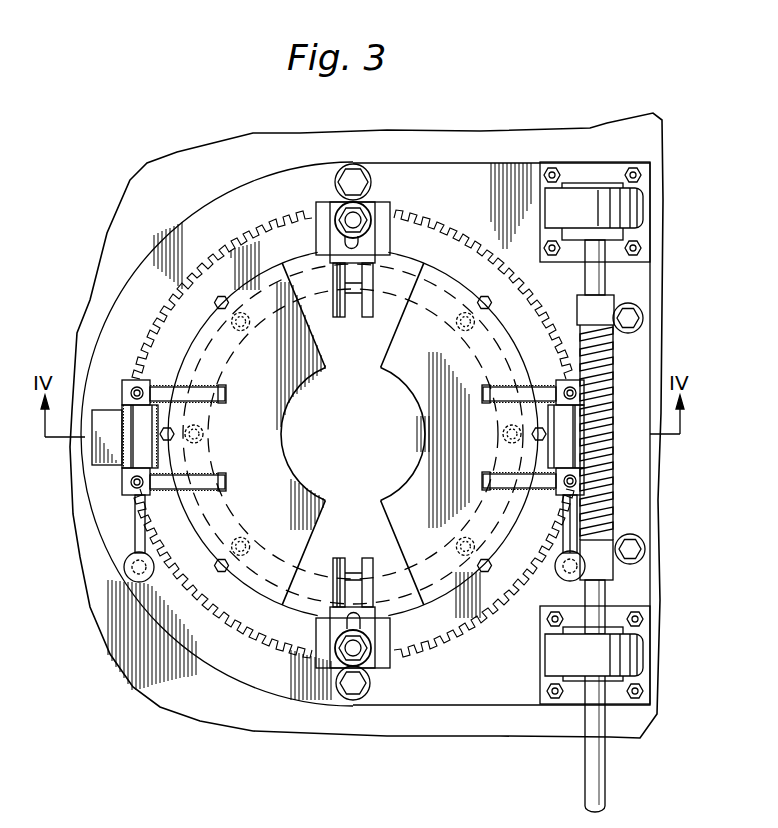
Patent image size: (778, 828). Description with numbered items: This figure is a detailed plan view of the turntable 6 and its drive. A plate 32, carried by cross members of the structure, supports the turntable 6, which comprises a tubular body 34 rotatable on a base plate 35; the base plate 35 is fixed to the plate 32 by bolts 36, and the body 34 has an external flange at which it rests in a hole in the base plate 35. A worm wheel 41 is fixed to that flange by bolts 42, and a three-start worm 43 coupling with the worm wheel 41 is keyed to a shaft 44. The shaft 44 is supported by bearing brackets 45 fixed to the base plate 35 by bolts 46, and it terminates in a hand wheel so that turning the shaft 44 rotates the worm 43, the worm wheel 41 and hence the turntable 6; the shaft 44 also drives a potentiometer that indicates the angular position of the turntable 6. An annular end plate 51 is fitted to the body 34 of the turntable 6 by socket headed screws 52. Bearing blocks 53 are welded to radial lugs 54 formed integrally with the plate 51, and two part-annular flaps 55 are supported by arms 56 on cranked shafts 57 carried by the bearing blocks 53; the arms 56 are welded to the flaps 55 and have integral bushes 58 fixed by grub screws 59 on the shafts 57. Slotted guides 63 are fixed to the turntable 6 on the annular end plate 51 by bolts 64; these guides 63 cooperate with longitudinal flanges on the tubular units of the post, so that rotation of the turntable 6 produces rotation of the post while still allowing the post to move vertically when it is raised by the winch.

The turntable 6 is at (227, 651).
The plate 32 is at (182, 162).
The tubular body 34 is at (363, 440).
The base plate 35 is at (157, 582).
The bolts 36 is at (373, 684).
The worm wheel 41 is at (480, 607).
The bolts 42 is at (490, 568).
The three-start worm 43 is at (580, 332).
The shaft 44 is at (590, 772).
The bearing brackets 45 is at (556, 203).
The bolts 46 is at (634, 170).
The annular end plate 51 is at (446, 598).
The socket headed screws 52 is at (503, 548).
The bearing blocks 53 is at (158, 427).
The radial lugs 54 is at (122, 408).
The part-annular flaps 55 is at (275, 495).
The arms 56 is at (217, 478).
The cranked shafts 57 is at (135, 537).
The bushes 58 is at (140, 392).
The grub screws 59 is at (122, 384).
The slotted guides 63 is at (353, 318).
The bolts 64 is at (360, 218).